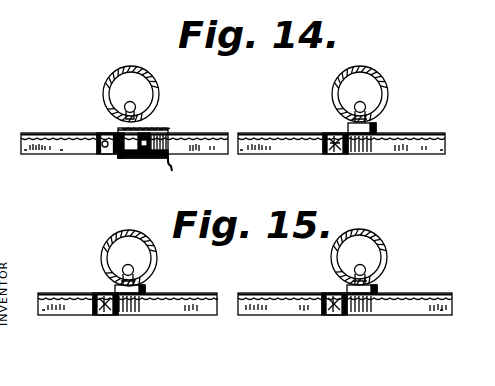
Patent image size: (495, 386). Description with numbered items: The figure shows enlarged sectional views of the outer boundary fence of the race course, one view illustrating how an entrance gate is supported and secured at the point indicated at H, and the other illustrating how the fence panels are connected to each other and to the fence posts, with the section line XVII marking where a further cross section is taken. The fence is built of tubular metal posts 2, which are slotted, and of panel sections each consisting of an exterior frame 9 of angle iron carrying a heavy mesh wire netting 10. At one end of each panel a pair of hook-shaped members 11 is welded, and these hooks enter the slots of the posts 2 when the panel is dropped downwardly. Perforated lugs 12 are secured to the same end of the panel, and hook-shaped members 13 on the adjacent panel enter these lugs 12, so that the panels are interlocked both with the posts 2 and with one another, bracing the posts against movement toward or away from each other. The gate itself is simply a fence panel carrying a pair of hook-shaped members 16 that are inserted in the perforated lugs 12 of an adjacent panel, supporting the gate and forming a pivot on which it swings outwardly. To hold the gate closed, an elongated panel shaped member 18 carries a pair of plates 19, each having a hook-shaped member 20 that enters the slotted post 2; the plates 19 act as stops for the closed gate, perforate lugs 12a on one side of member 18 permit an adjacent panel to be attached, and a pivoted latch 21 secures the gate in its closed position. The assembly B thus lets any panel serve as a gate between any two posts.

In FIG. 14, the tubular metal post 2 is at (133, 68).
In FIG. 15, the tubular metal post 2 is at (103, 248).
In FIG. 14, the exterior frame 9 is at (33, 133).
In FIG. 15, the exterior frame 9 is at (60, 317).
In FIG. 14, the heavy mesh wire netting 10 is at (52, 148).
In FIG. 15, the heavy mesh wire netting 10 is at (165, 306).
In FIG. 14, the hook-shaped member 11 is at (377, 109).
In FIG. 15, the hook-shaped member 11 is at (142, 291).
In FIG. 14, the perforated lug 12 is at (345, 154).
In FIG. 15, the perforated lug 12 is at (110, 320).
In FIG. 14, the perforate lug 12a is at (112, 160).
In FIG. 14, the hook-shaped member 13 is at (110, 128).
In FIG. 15, the hook-shaped member 13 is at (105, 317).
In FIG. 14, the hook-shaped member 16 is at (338, 154).
In FIG. 14, the elongated panel shaped member 18 is at (128, 161).
In FIG. 14, the plate 19 is at (163, 133).
In FIG. 14, the hook-shaped member 20 is at (125, 106).
In FIG. 14, the pivoted latch 21 is at (157, 160).
In FIG. 14, the buckle assembly B is at (430, 92).
In FIG. 15, the buckle assembly B is at (218, 281).
In FIG. 14, the entrance gate location H is at (252, 131).
In FIG. 15, the section line XVII is at (360, 337).